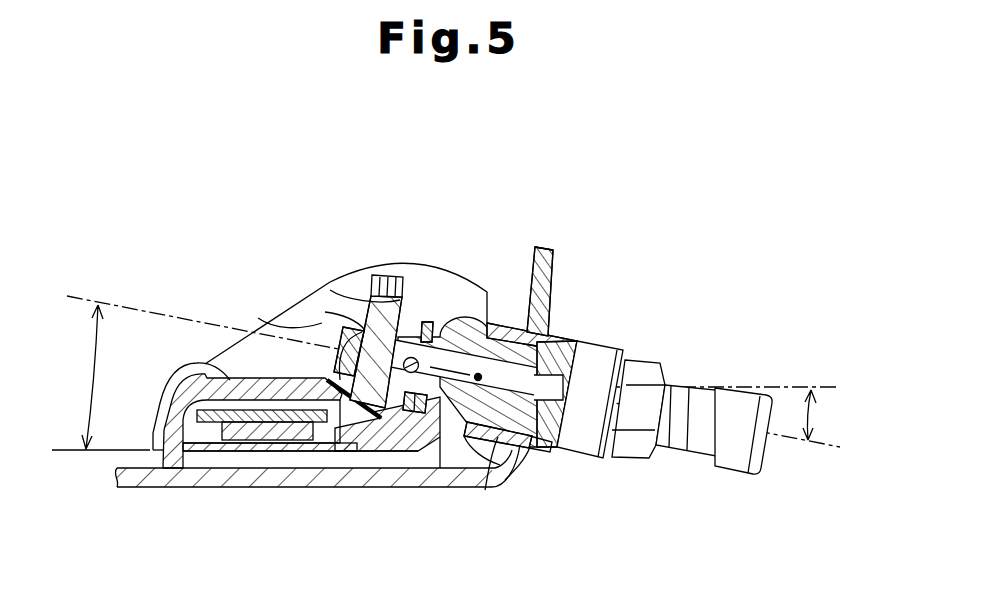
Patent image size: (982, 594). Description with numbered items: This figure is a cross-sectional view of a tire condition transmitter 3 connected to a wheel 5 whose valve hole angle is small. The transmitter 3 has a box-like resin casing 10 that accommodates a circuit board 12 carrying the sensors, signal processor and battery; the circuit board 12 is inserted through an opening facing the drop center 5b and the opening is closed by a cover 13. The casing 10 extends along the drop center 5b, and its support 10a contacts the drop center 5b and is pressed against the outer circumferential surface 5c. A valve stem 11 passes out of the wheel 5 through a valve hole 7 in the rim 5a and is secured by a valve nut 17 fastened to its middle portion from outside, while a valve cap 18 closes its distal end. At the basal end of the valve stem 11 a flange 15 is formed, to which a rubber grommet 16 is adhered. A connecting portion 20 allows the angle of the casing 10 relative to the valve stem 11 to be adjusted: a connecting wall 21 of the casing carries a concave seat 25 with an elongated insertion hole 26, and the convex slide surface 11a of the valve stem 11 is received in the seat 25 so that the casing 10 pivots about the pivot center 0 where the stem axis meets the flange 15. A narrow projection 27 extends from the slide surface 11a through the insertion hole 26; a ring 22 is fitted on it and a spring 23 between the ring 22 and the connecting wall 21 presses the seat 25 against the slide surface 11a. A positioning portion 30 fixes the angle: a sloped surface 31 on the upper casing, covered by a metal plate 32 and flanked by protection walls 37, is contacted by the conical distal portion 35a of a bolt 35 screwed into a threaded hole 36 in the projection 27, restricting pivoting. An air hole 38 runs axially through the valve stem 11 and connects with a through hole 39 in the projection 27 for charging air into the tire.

The transmitter 3 is at (759, 188).
The wheel 5 is at (546, 251).
The rim 5a is at (556, 255).
The drop center 5b is at (257, 481).
The outer circumferential surface 5c is at (236, 480).
The valve hole 7 is at (526, 447).
The pivot center 0 is at (543, 452).
The casing 10 is at (188, 364).
The support 10a is at (153, 465).
The valve stem 11 is at (713, 387).
The slide surface 11a is at (490, 487).
The circuit board 12 is at (212, 445).
The cover 13 is at (282, 445).
The flange 15 is at (500, 463).
The grommet 16 is at (505, 480).
The valve nut 17 is at (630, 458).
The valve cap 18 is at (733, 472).
The connecting portion 20 is at (467, 203).
The connecting wall 21 is at (477, 335).
The ring 22 is at (415, 312).
The spring 23 is at (433, 320).
The seat 25 is at (497, 323).
The insertion hole 26 is at (447, 318).
The projection 27 is at (340, 322).
The positioning portion 30 is at (266, 214).
The sloped surface 31 is at (340, 455).
The metal plate 32 is at (376, 455).
The bolt 35 is at (352, 298).
The distal portion 35a is at (406, 453).
The threaded hole 36 is at (343, 330).
The protection wall 37 is at (258, 318).
The air hole 38 is at (567, 350).
The through hole 39 is at (457, 450).